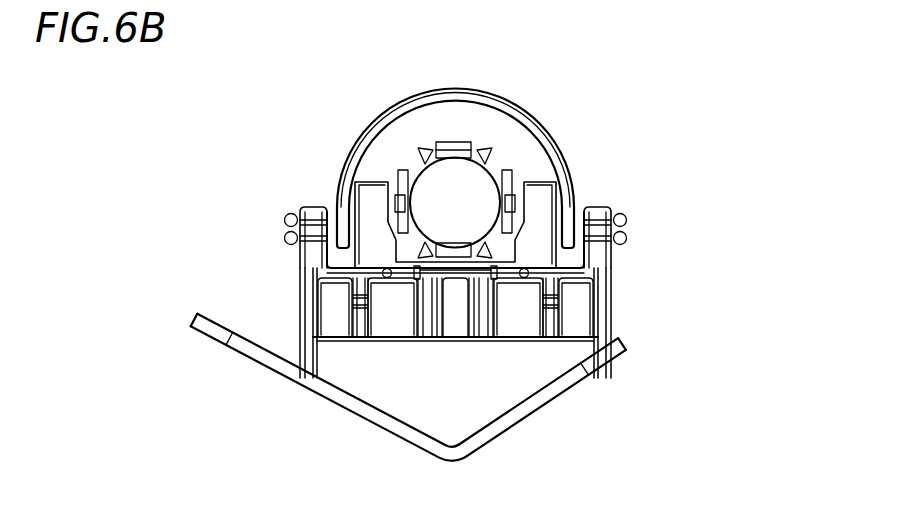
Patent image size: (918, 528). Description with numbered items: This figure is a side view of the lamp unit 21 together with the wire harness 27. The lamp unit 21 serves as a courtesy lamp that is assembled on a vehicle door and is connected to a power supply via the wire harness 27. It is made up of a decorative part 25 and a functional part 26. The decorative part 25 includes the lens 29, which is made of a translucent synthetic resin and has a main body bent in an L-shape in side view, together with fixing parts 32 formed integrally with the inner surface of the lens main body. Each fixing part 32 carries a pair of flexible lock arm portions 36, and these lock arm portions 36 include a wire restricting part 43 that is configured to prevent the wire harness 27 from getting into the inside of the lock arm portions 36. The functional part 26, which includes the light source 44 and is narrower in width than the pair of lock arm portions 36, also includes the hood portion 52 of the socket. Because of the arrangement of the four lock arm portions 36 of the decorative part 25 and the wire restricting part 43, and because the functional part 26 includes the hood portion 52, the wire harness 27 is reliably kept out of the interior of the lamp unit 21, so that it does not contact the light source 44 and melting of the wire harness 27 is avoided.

The lamp unit 21 is at (640, 73).
The decorative part 25 is at (371, 434).
The functional part 26 is at (523, 104).
The wire harness 27 is at (288, 214).
The lens 29 is at (503, 428).
The fixing part 32 is at (457, 327).
The lock arm portion 36 is at (316, 208).
The wire restricting part 43 is at (298, 252).
The light source 44 is at (454, 184).
The hood portion 52 is at (410, 106).